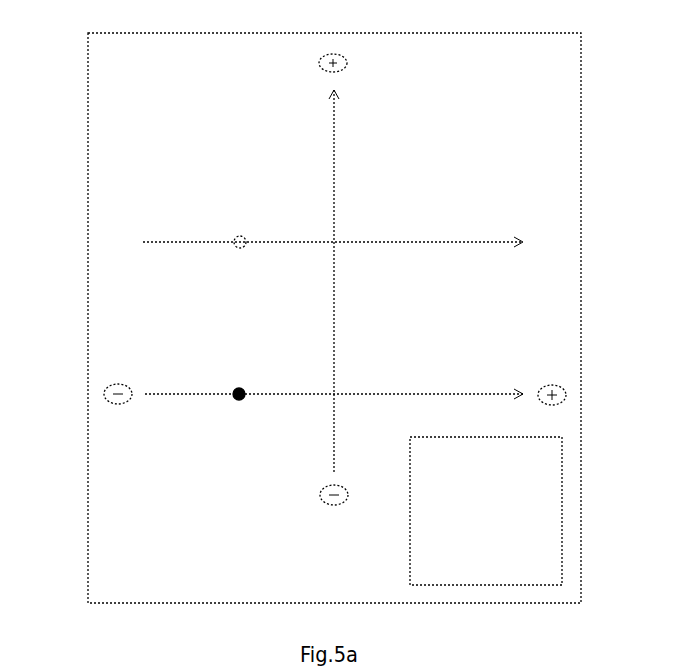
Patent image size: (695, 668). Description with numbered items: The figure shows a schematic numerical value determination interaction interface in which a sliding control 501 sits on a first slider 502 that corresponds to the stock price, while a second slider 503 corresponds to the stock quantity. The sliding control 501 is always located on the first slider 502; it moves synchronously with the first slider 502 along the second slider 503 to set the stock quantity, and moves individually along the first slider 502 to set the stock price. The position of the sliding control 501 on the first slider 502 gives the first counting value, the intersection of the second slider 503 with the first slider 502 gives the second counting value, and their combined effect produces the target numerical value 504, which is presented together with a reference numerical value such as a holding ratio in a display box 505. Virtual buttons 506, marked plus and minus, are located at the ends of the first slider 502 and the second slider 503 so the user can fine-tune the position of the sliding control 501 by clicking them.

The sliding control 501 is at (271, 371).
The first slider 502 is at (350, 384).
The second slider 503 is at (376, 281).
The target numerical value 504 is at (503, 535).
The position information text 505 is at (516, 514).
The virtual buttons 506 is at (334, 288).